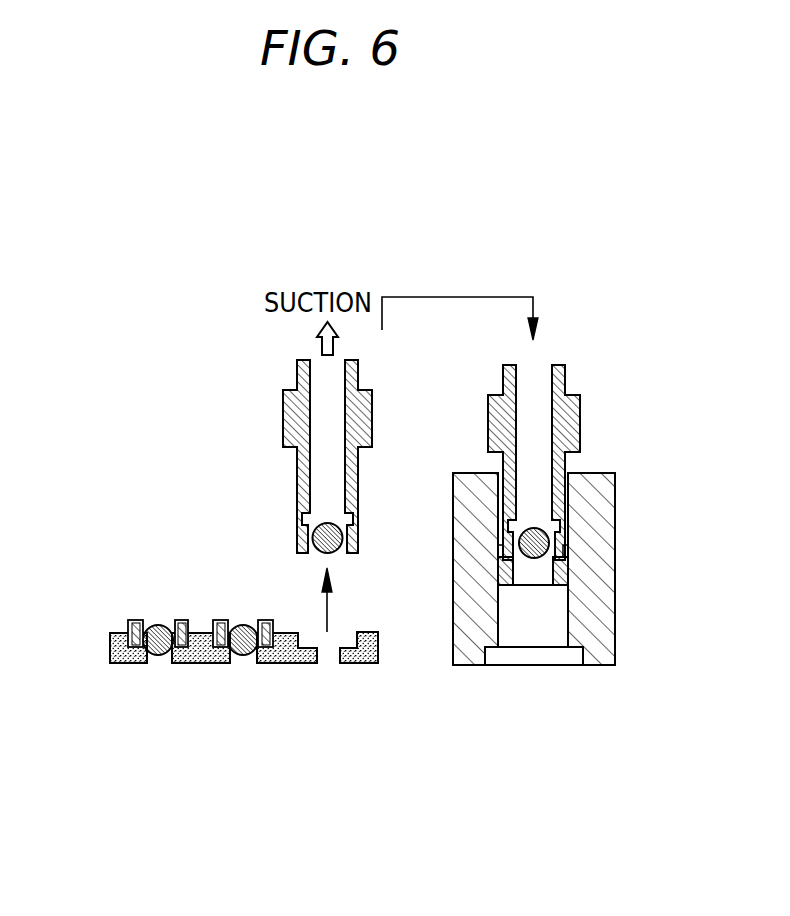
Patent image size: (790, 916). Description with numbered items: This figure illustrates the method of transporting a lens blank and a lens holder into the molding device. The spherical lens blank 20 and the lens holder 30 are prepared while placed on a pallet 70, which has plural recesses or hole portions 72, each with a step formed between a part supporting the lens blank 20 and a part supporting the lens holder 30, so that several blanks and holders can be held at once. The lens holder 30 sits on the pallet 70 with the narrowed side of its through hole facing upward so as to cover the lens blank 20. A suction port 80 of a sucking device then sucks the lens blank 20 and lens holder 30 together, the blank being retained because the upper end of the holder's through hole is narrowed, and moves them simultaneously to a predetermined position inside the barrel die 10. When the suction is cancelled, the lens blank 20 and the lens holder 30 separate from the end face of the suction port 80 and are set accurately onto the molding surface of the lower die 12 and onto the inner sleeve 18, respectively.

The barrel die 10 is at (600, 510).
The lower die 12 is at (540, 582).
The inner sleeve 18 is at (573, 580).
The lens blank 20 is at (157, 626).
The lens holder 30 is at (127, 625).
The pallet 70 is at (120, 664).
The hole portion 72 is at (330, 655).
The suction port 80 is at (297, 493).